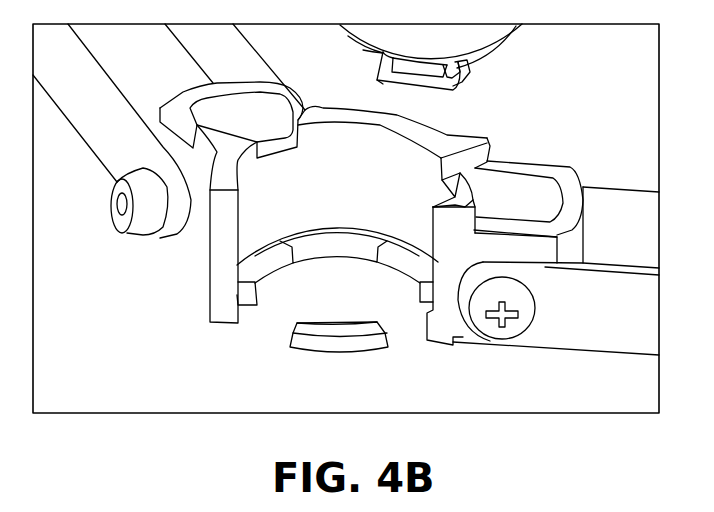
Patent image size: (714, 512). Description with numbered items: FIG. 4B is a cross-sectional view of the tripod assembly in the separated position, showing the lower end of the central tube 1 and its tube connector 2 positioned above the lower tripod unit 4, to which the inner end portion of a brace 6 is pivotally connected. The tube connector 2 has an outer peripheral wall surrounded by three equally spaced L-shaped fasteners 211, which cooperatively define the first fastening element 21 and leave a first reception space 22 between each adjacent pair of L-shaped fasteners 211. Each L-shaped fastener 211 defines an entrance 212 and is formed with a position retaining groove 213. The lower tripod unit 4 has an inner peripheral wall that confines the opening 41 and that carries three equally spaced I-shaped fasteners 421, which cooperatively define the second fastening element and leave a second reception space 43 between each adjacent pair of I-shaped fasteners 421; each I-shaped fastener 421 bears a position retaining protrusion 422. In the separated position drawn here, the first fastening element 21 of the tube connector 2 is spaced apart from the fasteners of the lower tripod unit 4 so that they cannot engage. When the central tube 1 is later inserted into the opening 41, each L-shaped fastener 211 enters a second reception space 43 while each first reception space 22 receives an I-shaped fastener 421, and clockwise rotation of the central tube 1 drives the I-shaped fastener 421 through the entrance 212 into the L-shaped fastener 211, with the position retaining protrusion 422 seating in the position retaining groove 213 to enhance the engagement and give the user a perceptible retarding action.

The central tube 1 is at (517, 27).
The tube connector 2 is at (505, 55).
The lower tripod unit 4 is at (554, 167).
The brace 6 is at (100, 133).
The first fastening element 21 is at (375, 68).
The first reception space 22 is at (363, 50).
The opening 41 is at (300, 282).
The second reception space 43 is at (277, 322).
The L-shaped fastener 211 is at (383, 84).
The entrance 212 is at (471, 68).
The position retaining groove 213 is at (450, 77).
The I-shaped fastener 421 is at (372, 345).
The position retaining protrusion 422 is at (343, 360).